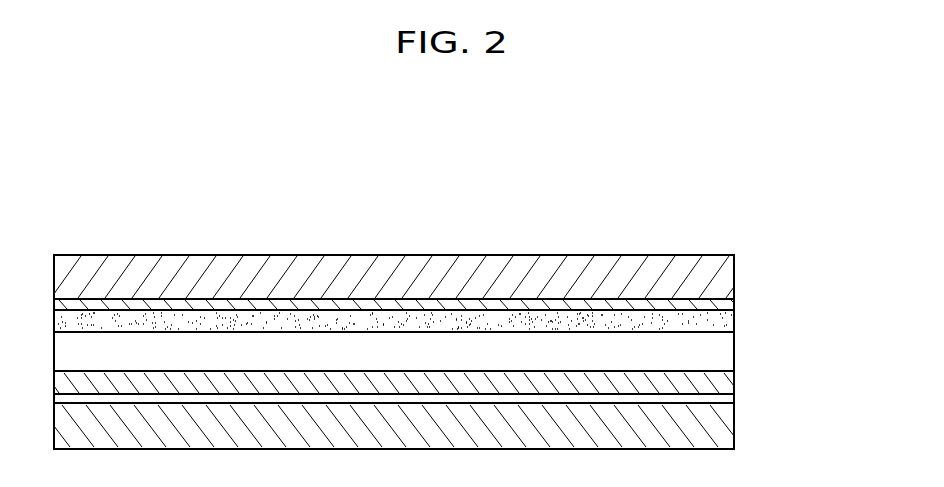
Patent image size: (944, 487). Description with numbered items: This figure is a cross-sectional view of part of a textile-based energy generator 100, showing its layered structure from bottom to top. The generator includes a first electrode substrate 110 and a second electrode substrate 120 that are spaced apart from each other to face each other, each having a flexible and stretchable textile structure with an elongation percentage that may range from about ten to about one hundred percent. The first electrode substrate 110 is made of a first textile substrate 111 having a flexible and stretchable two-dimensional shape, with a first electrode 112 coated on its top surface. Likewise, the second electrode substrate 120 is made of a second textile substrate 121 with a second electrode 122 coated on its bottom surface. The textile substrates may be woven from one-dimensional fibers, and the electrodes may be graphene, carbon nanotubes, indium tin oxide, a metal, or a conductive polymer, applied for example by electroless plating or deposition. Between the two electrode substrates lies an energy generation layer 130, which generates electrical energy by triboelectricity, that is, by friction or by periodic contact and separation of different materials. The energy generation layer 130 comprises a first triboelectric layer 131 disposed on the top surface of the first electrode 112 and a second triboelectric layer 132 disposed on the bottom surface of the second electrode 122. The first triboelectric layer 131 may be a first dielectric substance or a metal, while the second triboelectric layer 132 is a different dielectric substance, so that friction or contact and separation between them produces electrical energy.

The textile-based energy generator 100 is at (667, 205).
The first electrode substrate 110 is at (807, 387).
The first textile substrate 111 is at (725, 430).
The first electrode 112 is at (717, 398).
The second electrode substrate 120 is at (807, 258).
The second textile substrate 121 is at (717, 272).
The second electrode 122 is at (718, 307).
The energy generation layer 130 is at (807, 322).
The first triboelectric layer 131 is at (720, 382).
The second triboelectric layer 132 is at (718, 318).